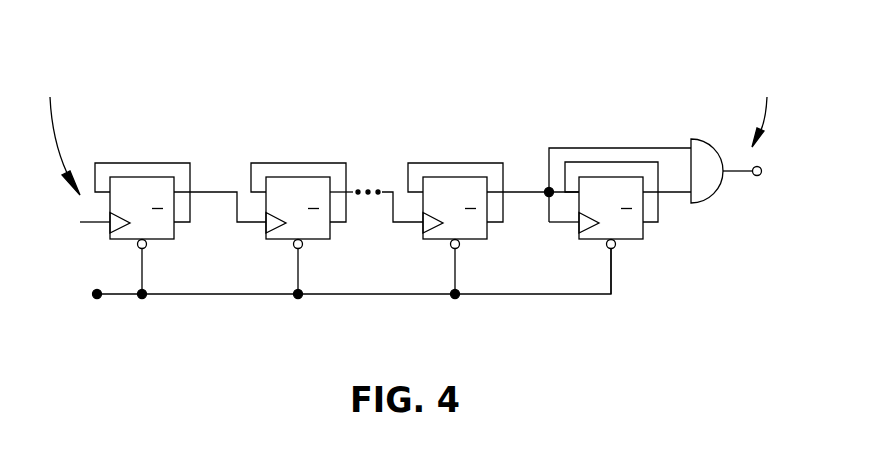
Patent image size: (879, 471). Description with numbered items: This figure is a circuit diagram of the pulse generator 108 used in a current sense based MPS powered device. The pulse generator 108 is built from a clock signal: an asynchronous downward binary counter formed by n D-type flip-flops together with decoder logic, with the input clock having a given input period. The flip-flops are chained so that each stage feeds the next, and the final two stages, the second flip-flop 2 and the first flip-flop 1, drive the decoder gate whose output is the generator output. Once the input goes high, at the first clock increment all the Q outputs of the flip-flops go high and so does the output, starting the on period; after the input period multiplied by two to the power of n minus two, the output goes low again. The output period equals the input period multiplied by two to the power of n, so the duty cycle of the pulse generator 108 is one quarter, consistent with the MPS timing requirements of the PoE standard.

The pulse generator 108 is at (421, 157).
The flip-flop FF1 1 is at (611, 209).
The flip-flop FF2 2 is at (455, 209).